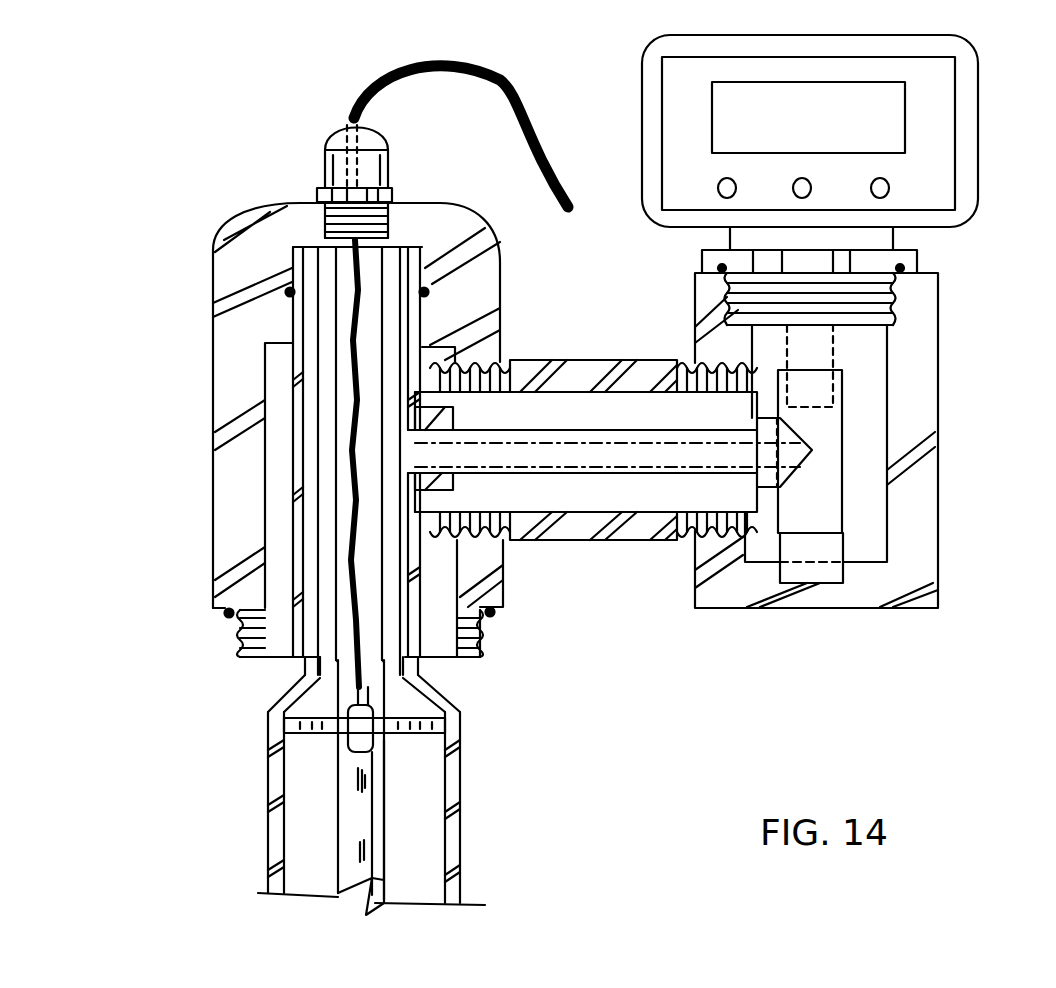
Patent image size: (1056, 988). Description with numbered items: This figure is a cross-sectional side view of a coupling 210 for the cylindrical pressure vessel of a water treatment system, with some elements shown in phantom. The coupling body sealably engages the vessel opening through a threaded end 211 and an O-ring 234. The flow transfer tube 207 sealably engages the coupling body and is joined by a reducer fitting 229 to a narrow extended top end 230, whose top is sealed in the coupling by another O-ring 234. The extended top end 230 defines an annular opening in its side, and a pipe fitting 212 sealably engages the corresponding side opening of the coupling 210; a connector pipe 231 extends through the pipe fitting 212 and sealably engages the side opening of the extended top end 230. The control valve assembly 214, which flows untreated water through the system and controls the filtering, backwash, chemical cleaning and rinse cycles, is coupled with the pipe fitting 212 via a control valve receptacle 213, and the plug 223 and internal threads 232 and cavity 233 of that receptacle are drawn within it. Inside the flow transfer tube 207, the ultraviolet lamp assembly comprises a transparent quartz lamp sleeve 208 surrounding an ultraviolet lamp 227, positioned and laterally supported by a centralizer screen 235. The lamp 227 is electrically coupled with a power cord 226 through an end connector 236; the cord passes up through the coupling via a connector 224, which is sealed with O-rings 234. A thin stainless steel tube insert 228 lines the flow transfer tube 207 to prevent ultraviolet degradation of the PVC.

The flow transfer tube 207 is at (462, 810).
The transparent quartz lamp sleeve 208 is at (386, 800).
The coupling 210 is at (213, 344).
The threaded end 211 is at (240, 652).
The pipe fitting 212 is at (583, 541).
The control valve receptacle 213 is at (938, 437).
The control valve assembly 214 is at (978, 97).
The plug 223 is at (843, 468).
The connector 224 is at (388, 132).
The power cord 226 is at (536, 102).
The ultraviolet lamp 227 is at (342, 818).
The stainless steel tube insert 228 is at (422, 838).
The reducer fitting 229 is at (450, 684).
The extended top end 230 is at (306, 437).
The connector pipe 231 is at (522, 430).
The threads 232 is at (845, 326).
The cavity 233 is at (843, 578).
The O-ring 234 is at (330, 170).
The centralizer screen 235 is at (305, 700).
The end connector 236 is at (345, 740).